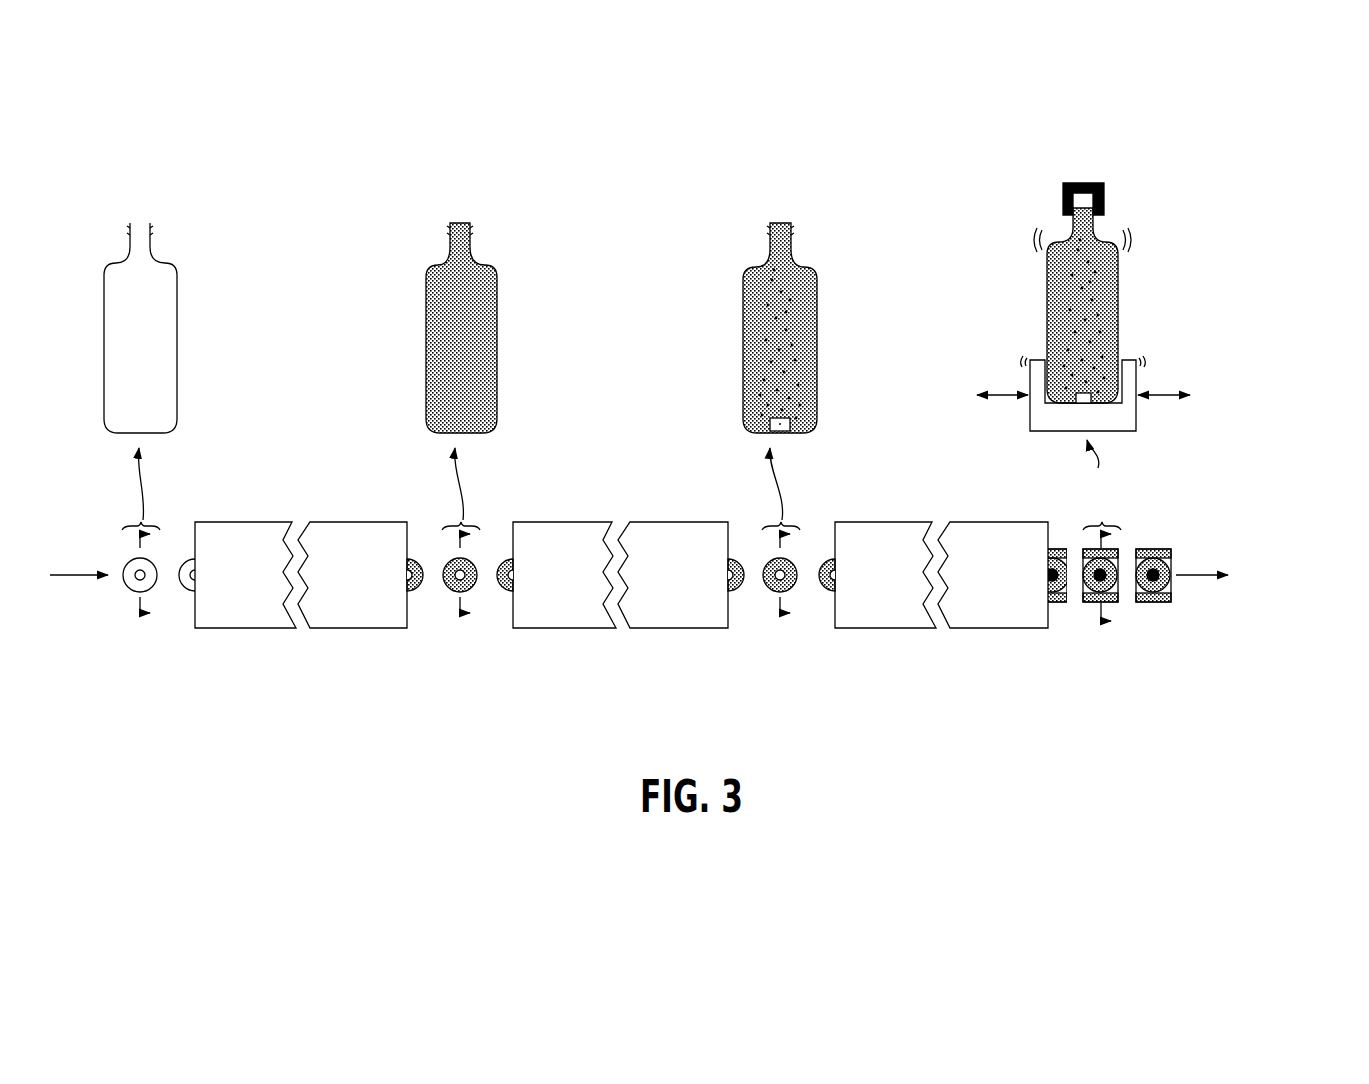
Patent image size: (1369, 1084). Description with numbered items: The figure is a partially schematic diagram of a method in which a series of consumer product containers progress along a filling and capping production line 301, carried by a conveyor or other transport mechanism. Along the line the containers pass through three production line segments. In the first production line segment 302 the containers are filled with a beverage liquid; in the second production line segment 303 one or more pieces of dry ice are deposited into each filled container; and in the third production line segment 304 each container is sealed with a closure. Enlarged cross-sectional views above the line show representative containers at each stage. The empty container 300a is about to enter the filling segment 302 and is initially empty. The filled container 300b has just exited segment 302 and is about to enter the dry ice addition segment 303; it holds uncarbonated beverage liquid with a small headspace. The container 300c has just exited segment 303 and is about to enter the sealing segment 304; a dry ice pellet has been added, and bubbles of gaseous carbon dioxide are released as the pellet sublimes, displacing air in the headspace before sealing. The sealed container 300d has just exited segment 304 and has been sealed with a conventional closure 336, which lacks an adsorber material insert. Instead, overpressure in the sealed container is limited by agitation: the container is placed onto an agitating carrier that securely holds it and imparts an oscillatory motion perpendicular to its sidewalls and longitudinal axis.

The empty container 300a is at (178, 322).
The filled container 300b is at (497, 428).
The container with dry ice added 300c is at (825, 461).
The sealed container 300d is at (1160, 450).
The filling and capping production line 301 is at (218, 741).
The first production line segment 302 is at (407, 634).
The second production line segment 303 is at (728, 634).
The third production line segment 304 is at (1048, 634).
The conventional closure 336 is at (1104, 200).